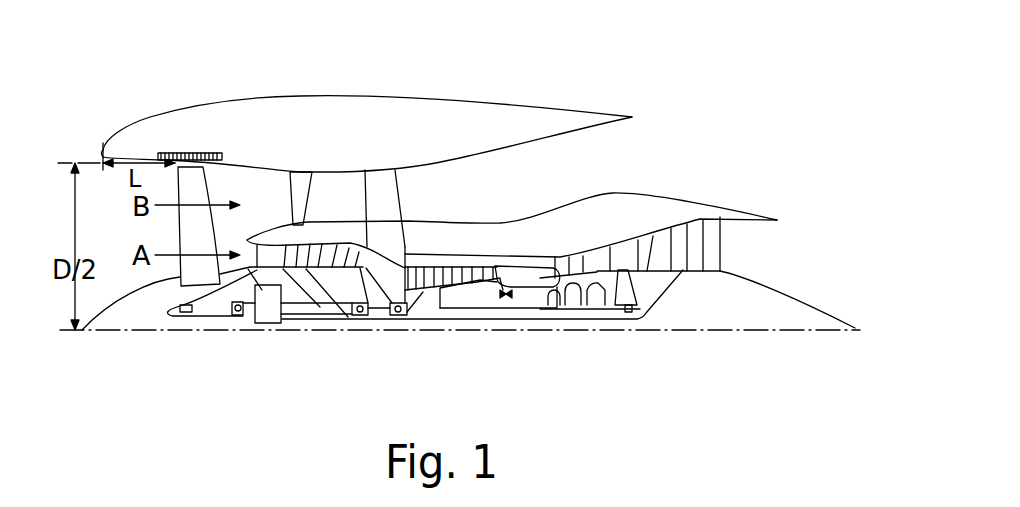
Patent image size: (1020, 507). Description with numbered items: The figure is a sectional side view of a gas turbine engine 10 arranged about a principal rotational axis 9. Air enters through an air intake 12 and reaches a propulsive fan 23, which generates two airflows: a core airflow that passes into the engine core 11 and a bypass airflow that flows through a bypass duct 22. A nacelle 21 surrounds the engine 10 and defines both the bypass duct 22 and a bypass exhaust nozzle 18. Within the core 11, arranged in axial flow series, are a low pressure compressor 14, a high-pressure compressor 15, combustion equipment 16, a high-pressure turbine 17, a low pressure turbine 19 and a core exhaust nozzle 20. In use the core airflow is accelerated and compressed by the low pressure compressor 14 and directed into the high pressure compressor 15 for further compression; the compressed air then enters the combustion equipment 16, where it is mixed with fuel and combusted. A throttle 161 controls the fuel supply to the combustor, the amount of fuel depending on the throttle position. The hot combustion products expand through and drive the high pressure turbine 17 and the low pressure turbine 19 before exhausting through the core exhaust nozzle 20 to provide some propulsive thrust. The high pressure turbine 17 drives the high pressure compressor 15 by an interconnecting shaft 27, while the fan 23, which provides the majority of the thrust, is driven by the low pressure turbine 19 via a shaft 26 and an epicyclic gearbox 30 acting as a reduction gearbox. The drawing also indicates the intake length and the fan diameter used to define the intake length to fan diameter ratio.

The principal rotational axis 9 is at (745, 333).
The gas turbine engine 10 is at (333, 87).
The core 11 is at (535, 237).
The air intake 12 is at (81, 121).
The low pressure compressor 14 is at (327, 247).
The high-pressure compressor 15 is at (457, 273).
The combustion equipment 16 is at (520, 278).
The high-pressure turbine 17 is at (577, 260).
The bypass exhaust nozzle 18 is at (735, 113).
The low pressure turbine 19 is at (698, 257).
The core exhaust nozzle 20 is at (785, 255).
The nacelle 21 is at (378, 113).
The bypass duct 22 is at (613, 152).
The propulsive fan 23 is at (187, 220).
The shaft 26 is at (423, 320).
The interconnecting shaft 27 is at (483, 310).
The epicyclic gearbox 30 is at (268, 313).
The throttle 161 is at (512, 297).